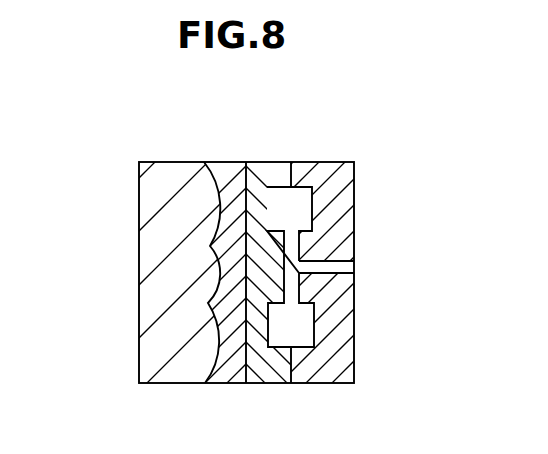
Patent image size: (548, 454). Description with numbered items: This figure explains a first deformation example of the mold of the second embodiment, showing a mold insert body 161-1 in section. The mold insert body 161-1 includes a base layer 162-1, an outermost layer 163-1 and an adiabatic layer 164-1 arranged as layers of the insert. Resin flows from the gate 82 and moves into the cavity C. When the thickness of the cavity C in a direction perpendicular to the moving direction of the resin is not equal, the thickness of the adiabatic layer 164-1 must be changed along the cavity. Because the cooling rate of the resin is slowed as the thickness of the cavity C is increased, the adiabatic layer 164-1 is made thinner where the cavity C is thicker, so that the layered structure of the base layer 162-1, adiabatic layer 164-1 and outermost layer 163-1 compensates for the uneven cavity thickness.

The mold insert body 161-1 is at (136, 107).
The base layer 162-1 is at (167, 372).
The outermost layer 163-1 is at (265, 162).
The adiabatic layer 164-1 is at (220, 162).
The gate 82 is at (337, 262).
The cavity C is at (300, 340).